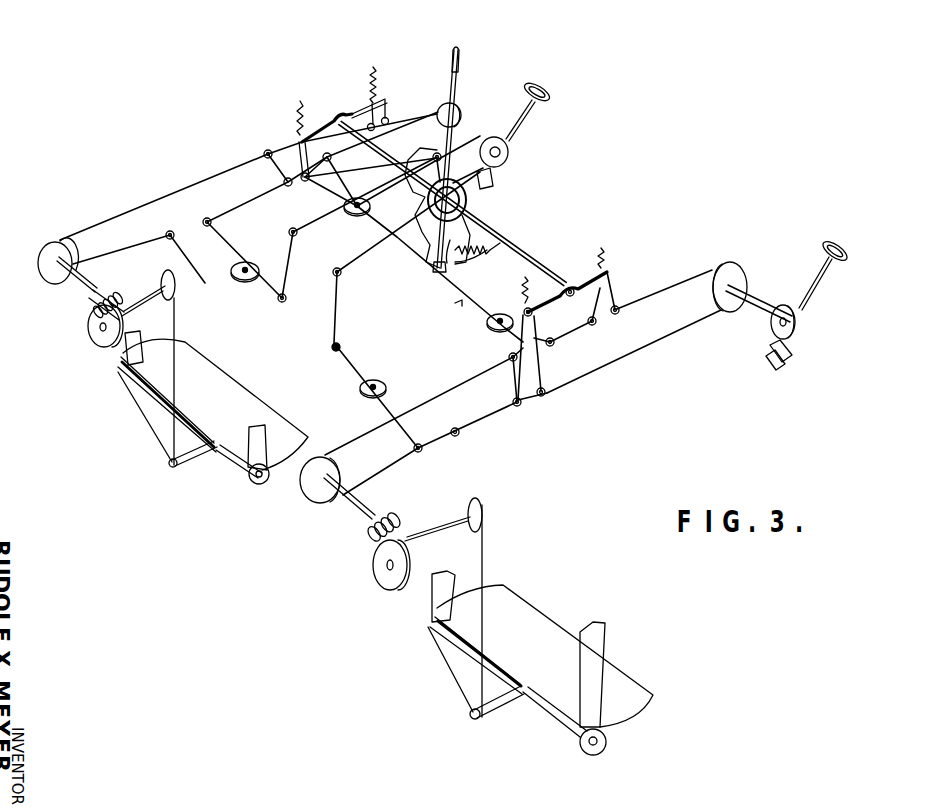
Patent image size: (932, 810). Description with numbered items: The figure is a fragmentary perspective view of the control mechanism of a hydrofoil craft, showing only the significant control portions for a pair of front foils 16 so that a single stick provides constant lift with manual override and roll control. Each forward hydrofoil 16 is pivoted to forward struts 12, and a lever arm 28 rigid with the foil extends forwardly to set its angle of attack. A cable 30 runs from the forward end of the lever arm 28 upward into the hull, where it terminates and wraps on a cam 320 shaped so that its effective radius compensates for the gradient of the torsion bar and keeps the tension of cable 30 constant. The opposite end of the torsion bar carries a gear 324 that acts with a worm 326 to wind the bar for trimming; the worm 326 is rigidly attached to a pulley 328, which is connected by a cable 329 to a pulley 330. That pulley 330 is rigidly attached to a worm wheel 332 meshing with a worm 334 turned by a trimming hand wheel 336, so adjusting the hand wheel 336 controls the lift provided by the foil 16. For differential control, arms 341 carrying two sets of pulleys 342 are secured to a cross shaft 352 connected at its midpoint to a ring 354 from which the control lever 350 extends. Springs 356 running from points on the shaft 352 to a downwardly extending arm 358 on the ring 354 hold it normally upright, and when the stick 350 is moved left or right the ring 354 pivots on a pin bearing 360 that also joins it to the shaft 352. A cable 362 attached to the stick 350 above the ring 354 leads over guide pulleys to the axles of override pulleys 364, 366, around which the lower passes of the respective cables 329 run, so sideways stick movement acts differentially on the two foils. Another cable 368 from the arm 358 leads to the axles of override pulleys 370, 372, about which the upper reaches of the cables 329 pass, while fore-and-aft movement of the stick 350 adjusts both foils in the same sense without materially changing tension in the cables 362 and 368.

The forward struts 12 is at (124, 360).
The forward hydrofoil 16 is at (254, 406).
The lever arm 28 is at (188, 467).
The cable 30 is at (172, 411).
The cam 320 is at (180, 282).
The gear 324 is at (100, 338).
The worm 326 is at (113, 297).
The pulley 328 is at (46, 287).
The cable 329 is at (350, 194).
The pulley 330 is at (738, 266).
The worm wheel 332 is at (790, 354).
The worm 334 is at (800, 316).
The trimming hand wheel 336 is at (550, 95).
The arms 341 is at (338, 116).
The pulleys 342 is at (390, 104).
The control lever 350 is at (462, 62).
The cross shaft 352 is at (488, 226).
The ring 354 is at (467, 200).
The springs 356 is at (433, 266).
The arm 358 is at (473, 257).
The pin bearing 360 is at (420, 208).
The cable 362 is at (472, 146).
The override pulley 364 is at (245, 282).
The override pulley 366 is at (360, 386).
The cable 368 is at (448, 312).
The override pulley 370 is at (355, 215).
The override pulley 372 is at (492, 330).